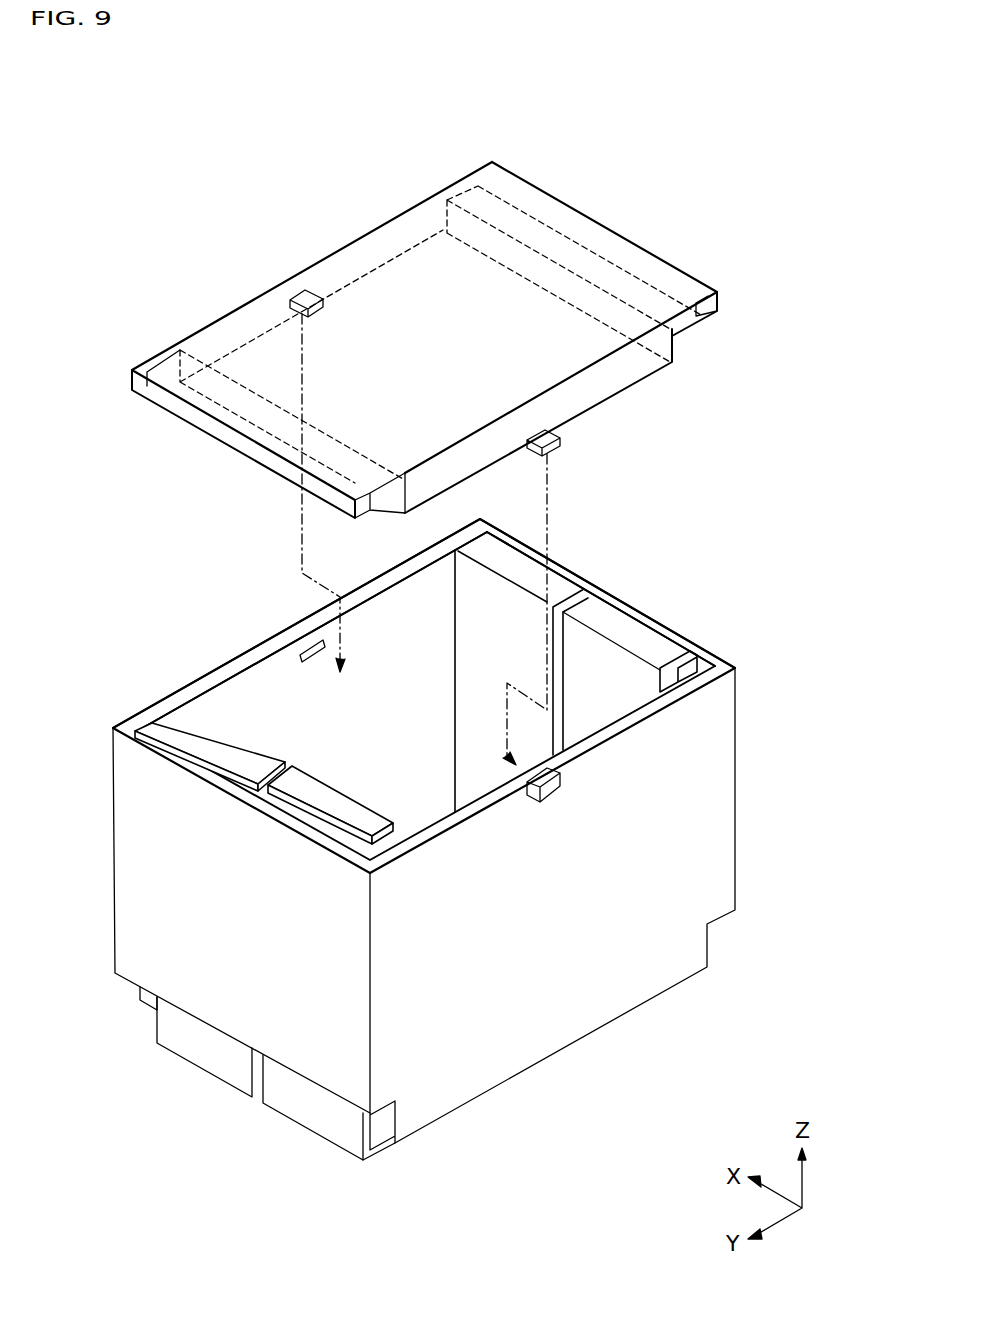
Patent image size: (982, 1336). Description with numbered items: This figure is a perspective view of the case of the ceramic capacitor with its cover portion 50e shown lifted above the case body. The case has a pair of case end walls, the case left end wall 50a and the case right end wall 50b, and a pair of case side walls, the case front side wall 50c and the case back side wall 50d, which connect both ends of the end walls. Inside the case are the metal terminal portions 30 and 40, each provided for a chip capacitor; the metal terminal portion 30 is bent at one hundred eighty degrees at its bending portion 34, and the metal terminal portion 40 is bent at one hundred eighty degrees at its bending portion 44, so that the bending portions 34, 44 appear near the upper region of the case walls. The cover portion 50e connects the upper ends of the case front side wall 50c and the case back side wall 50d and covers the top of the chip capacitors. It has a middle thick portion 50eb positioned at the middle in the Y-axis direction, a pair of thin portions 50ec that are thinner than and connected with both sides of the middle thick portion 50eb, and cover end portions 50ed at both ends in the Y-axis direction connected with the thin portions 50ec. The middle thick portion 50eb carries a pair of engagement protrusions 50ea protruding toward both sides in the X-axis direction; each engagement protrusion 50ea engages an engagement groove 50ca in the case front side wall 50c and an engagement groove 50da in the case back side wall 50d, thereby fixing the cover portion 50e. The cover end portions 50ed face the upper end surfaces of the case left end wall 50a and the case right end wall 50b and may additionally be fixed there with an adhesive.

The metal terminal portion 30 is at (164, 702).
The bending portion 34 is at (200, 733).
The metal terminal portion 40 is at (731, 558).
The bending portion 44 is at (557, 585).
The case left end wall 50a is at (200, 769).
The case right end wall 50b is at (680, 633).
The case front side wall 50c is at (643, 713).
The engagement groove 50ca is at (565, 792).
The case back side wall 50d is at (312, 624).
The engagement groove 50da is at (300, 653).
The cover portion 50e is at (415, 190).
The engagement protrusion 50ea is at (290, 285).
The middle thick portion 50eb is at (638, 367).
The thin portion 50ec is at (393, 491).
The cover end portion 50ed is at (703, 317).